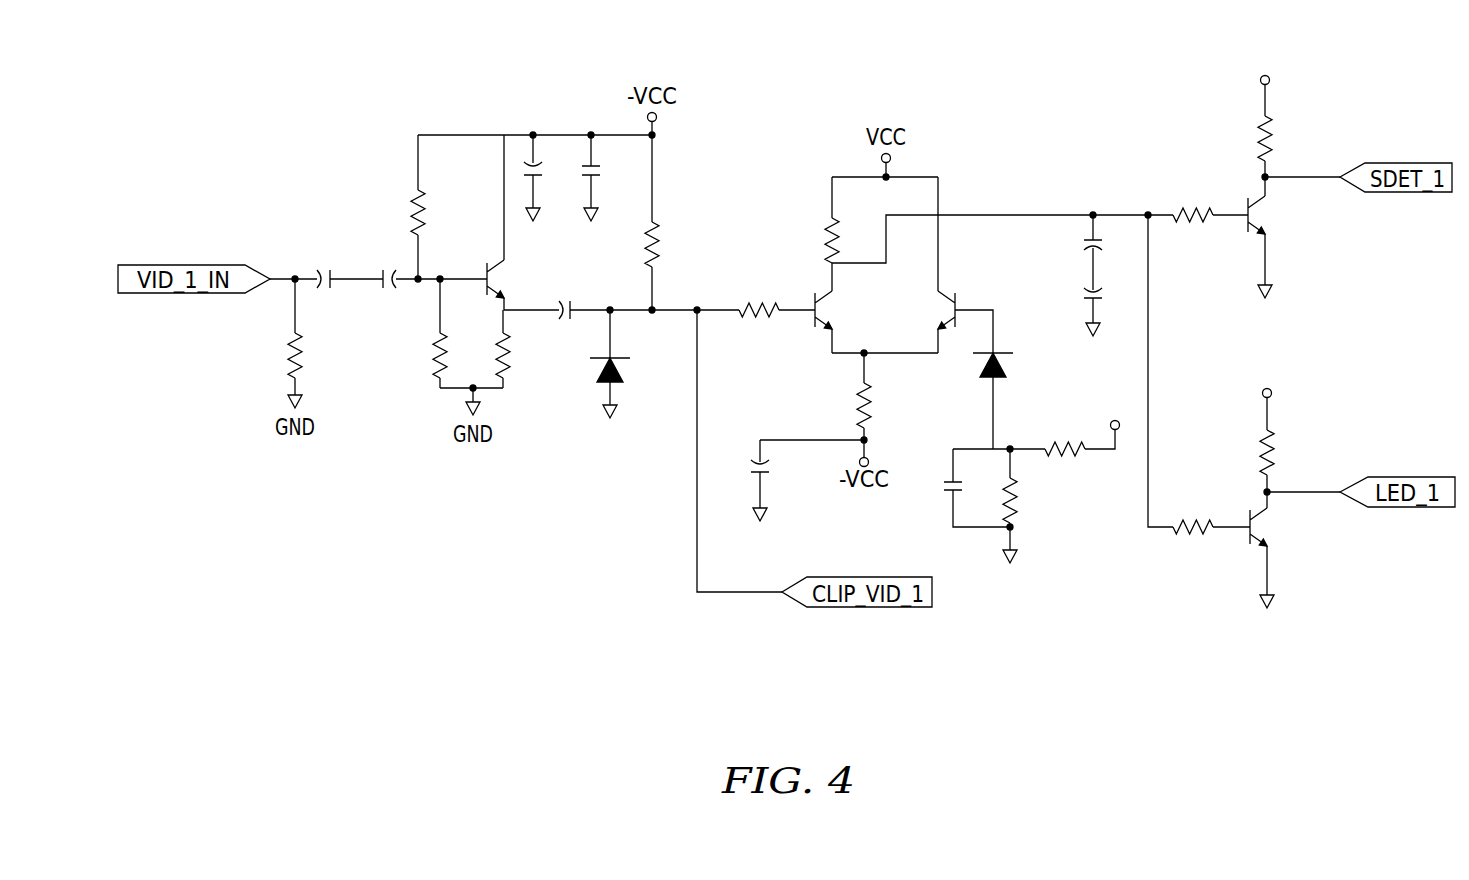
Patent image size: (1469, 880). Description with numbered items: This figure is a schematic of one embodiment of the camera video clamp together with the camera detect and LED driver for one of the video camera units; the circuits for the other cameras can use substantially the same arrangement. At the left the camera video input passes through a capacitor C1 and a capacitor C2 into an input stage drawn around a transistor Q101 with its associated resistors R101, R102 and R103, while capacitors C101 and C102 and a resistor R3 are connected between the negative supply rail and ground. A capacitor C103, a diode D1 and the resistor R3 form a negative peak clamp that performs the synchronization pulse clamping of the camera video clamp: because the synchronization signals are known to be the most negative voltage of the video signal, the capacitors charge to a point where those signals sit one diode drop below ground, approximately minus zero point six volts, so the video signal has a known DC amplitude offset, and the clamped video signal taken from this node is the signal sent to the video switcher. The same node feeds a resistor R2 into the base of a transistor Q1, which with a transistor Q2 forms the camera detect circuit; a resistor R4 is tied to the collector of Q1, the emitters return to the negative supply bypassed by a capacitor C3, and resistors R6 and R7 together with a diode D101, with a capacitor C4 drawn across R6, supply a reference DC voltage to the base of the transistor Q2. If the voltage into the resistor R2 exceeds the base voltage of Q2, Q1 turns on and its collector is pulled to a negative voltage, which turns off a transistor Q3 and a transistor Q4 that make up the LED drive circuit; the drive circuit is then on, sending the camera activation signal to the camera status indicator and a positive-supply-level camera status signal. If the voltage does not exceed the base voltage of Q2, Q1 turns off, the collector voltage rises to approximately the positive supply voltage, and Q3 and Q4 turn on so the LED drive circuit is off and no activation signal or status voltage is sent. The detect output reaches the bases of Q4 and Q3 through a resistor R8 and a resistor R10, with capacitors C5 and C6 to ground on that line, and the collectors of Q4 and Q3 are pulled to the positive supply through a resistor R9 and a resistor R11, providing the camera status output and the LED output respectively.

The coupling capacitor C1 is at (349, 262).
The coupling capacitor C2 is at (435, 262).
The bias resistor R101 is at (448, 207).
The bias resistor R102 is at (413, 333).
The emitter resistor R103 is at (530, 349).
The transistor Q101 is at (523, 222).
The bypass capacitor C101 is at (549, 194).
The bypass capacitor C102 is at (607, 194).
The capacitor C103 is at (584, 296).
The resistor R3 is at (670, 222).
The diode D1 is at (617, 378).
The resistor R2 is at (777, 290).
The transistor Q1 is at (840, 308).
The transistor Q2 is at (951, 265).
The resistor R4 is at (999, 220).
The bypass capacitor C3 is at (765, 496).
The diode D101 is at (1011, 384).
The capacitor C4 is at (978, 488).
The resistor R6 is at (1018, 521).
The resistor R7 is at (1072, 423).
The capacitor C5 is at (1110, 252).
The capacitor C6 is at (1104, 322).
The base resistor R8 is at (1210, 195).
The transistor Q4 is at (1273, 252).
The collector resistor R9 is at (1275, 110).
The base resistor R10 is at (1211, 511).
The transistor Q3 is at (1275, 566).
The collector resistor R11 is at (1280, 425).